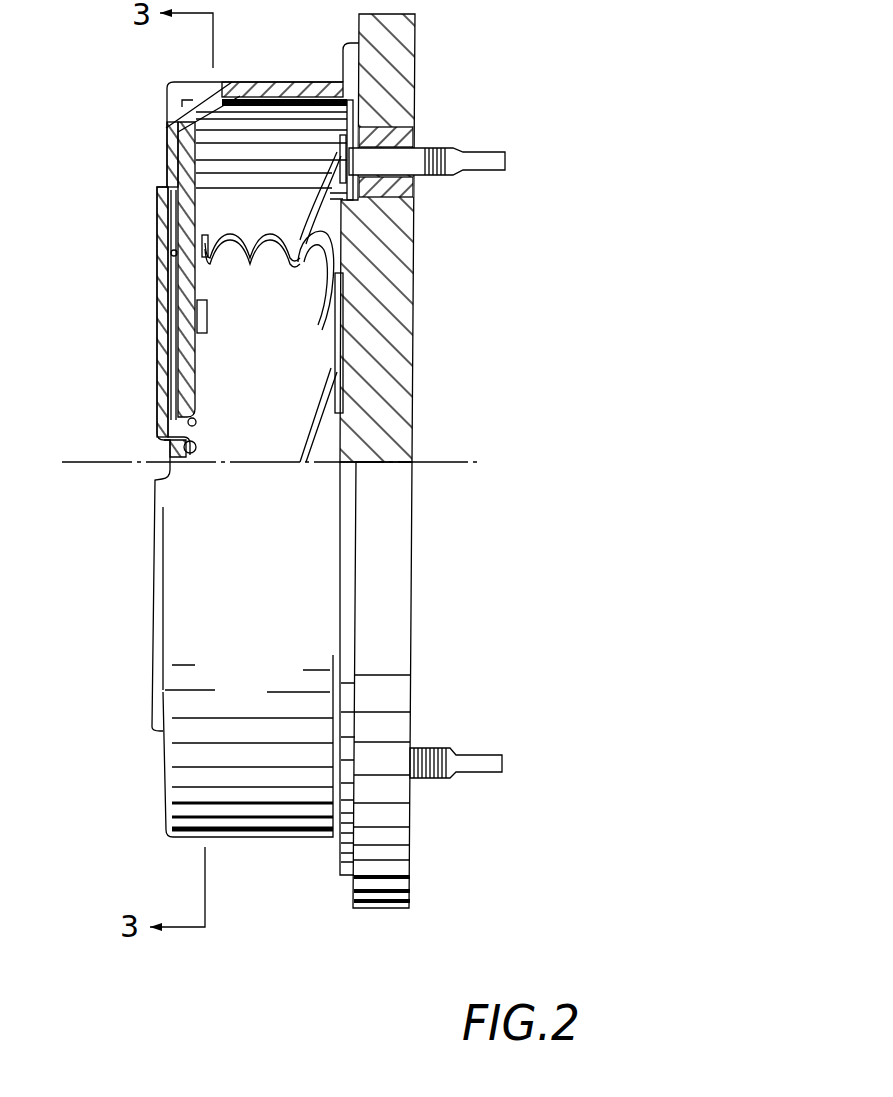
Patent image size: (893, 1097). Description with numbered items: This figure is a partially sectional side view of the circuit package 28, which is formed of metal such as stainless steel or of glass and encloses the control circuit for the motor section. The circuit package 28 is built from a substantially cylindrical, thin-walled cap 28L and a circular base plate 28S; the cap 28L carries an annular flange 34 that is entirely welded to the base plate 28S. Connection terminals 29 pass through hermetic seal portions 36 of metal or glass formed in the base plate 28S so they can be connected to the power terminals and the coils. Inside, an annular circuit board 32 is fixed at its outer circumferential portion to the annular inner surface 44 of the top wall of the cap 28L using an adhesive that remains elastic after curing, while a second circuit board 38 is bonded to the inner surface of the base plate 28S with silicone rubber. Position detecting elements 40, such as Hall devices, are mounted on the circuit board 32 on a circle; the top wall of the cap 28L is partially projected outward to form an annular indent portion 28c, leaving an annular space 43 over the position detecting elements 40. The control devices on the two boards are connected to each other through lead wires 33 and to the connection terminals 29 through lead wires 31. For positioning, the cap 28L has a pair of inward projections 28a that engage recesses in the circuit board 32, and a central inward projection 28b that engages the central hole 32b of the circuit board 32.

The circuit package 28 is at (150, 573).
The inward projections 28a is at (167, 86).
The central inward projection 28b is at (197, 445).
The annular indent portion 28c is at (173, 256).
The cap 28L is at (162, 645).
The base plate 28S is at (407, 877).
The connection terminals 29 is at (498, 163).
The lead wires 31 is at (352, 219).
The annular circuit board 32 is at (197, 392).
The central hole 32b is at (155, 390).
The lead wires 33 is at (253, 262).
The annular flange 34 is at (362, 76).
The hermetic seal portions 36 is at (410, 138).
The circuit board 38 is at (365, 385).
The position detecting elements 40 is at (208, 316).
The annular space 43 is at (175, 226).
The annular inner surface 44 is at (177, 148).